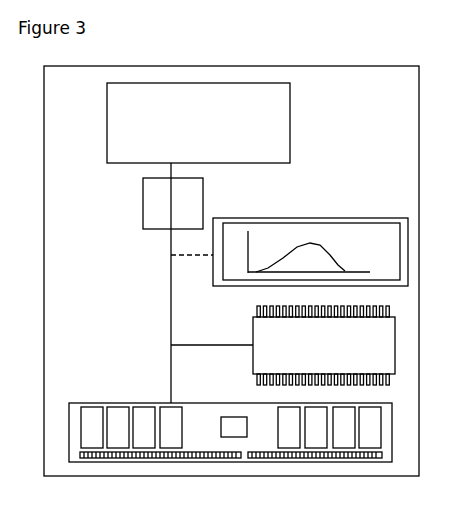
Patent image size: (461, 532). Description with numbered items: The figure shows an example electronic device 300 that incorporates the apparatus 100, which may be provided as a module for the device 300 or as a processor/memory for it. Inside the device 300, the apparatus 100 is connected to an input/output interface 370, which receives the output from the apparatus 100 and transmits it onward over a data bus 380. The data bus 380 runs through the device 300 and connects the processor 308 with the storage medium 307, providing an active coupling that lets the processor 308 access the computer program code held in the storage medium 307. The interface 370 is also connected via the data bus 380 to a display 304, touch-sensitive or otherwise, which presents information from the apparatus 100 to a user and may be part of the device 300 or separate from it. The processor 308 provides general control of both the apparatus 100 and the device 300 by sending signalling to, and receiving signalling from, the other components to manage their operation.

The electronic device 300 is at (100, 497).
The apparatus 100 is at (215, 135).
The input/output interface 370 is at (189, 216).
The data bus 380 is at (170, 312).
The display 304 is at (324, 232).
The processor 308 is at (345, 360).
The storage medium 307 is at (200, 437).